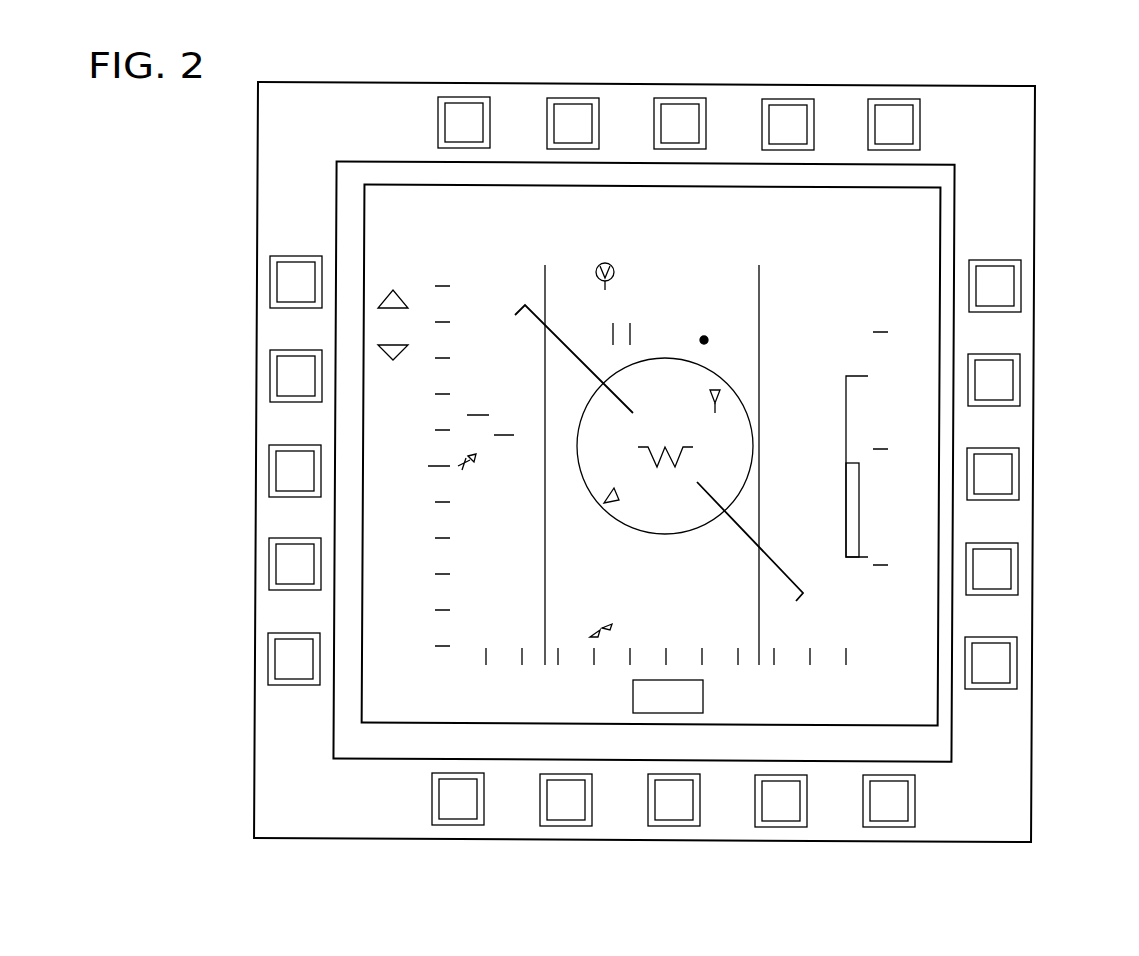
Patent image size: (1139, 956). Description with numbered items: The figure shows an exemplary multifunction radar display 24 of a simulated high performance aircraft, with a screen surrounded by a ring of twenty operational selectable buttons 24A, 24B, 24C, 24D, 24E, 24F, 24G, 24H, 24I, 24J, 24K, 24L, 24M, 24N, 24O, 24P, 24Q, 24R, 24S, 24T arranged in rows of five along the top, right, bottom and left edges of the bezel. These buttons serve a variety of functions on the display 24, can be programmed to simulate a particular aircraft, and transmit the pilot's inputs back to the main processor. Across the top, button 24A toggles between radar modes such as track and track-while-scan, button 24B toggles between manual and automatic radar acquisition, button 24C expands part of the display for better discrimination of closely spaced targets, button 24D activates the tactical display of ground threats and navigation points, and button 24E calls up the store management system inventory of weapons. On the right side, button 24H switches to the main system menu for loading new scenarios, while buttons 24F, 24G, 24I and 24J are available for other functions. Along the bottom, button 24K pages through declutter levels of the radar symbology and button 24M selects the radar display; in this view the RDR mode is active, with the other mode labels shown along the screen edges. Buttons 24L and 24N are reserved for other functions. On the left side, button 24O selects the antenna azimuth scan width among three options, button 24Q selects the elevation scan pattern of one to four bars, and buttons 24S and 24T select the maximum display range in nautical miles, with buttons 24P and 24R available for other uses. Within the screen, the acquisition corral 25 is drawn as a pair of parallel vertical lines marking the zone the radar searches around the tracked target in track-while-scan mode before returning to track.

The radar display 24 is at (205, 771).
The acquisition corral 25 is at (612, 332).
The operational selectable button 24A is at (464, 97).
The operational selectable button 24B is at (572, 98).
The operational selectable button 24C is at (679, 98).
The operational selectable button 24D is at (786, 99).
The operational selectable button 24E is at (892, 99).
The operational selectable button 24F is at (1021, 284).
The operational selectable button 24G is at (1020, 378).
The operational selectable button 24H is at (1019, 472).
The operational selectable button 24I is at (1018, 567).
The operational selectable button 24J is at (1017, 661).
The operational selectable button 24K is at (887, 827).
The operational selectable button 24L is at (779, 827).
The operational selectable button 24M is at (672, 826).
The operational selectable button 24N is at (564, 826).
The operational selectable button 24O is at (456, 825).
The operational selectable button 24P is at (268, 654).
The operational selectable button 24Q is at (269, 560).
The operational selectable button 24R is at (269, 466).
The operational selectable button 24S is at (270, 372).
The operational selectable button 24T is at (270, 278).